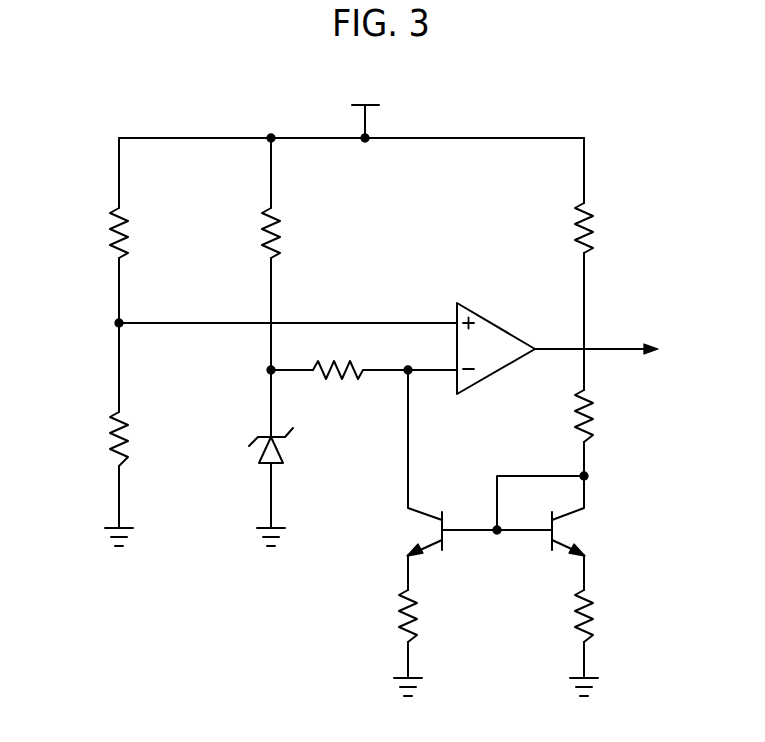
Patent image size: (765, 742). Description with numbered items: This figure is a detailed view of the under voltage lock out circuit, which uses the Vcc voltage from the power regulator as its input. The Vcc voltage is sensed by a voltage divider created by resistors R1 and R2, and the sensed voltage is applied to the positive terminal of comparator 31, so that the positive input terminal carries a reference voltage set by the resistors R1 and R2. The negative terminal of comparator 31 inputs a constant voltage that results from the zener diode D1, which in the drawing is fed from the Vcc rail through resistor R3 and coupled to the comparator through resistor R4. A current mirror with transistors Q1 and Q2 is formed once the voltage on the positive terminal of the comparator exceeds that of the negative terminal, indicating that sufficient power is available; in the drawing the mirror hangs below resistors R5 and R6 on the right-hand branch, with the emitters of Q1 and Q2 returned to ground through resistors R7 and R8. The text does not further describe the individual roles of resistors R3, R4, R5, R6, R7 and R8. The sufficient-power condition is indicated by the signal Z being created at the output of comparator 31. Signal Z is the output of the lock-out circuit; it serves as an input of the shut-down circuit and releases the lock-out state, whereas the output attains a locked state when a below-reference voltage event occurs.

The resistor R1 is at (137, 233).
The resistor R2 is at (138, 439).
The resistor R3 is at (289, 233).
The resistor R4 is at (338, 384).
The resistor R5 is at (602, 228).
The resistor R6 is at (602, 416).
The resistor R7 is at (427, 616).
The resistor R8 is at (603, 616).
The zener diode D1 is at (286, 447).
The transistor Q1 is at (438, 463).
The transistor Q2 is at (558, 516).
The comparator 31 is at (502, 327).
The Vcc voltage Vcc is at (364, 110).
The signal Z is at (606, 350).